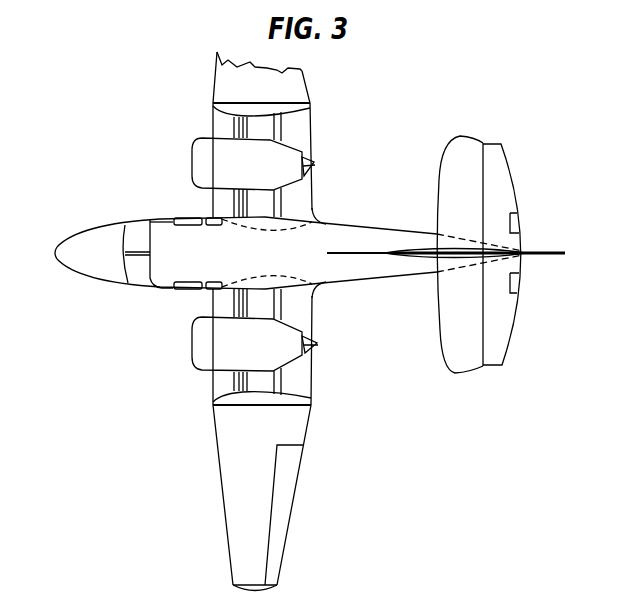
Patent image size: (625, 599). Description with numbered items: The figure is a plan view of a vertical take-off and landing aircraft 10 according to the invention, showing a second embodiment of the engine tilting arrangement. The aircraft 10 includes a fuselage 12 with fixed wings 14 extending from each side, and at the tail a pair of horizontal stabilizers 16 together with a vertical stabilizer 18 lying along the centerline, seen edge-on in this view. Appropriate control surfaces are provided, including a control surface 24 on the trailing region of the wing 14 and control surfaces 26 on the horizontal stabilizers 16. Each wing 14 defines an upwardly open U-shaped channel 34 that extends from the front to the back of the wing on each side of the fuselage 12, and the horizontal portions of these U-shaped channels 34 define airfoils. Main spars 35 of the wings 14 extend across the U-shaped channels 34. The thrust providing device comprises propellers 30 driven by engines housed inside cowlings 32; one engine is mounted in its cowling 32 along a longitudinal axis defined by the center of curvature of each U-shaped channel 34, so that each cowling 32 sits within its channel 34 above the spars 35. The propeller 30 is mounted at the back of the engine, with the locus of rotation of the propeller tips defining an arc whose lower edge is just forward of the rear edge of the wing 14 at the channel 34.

The vertical take-off and landing aircraft 10 is at (112, 176).
The fuselage 12 is at (172, 290).
The fixed wings 14 is at (225, 75).
The horizontal stabilizers 16 is at (450, 183).
The vertical stabilizer 18 is at (457, 258).
The control surface 24 is at (287, 478).
The control surface 26 is at (497, 177).
The propeller 30 is at (313, 167).
The cowling 32 is at (203, 150).
The U-shaped channel 34 is at (300, 128).
The main spar 35 is at (233, 203).